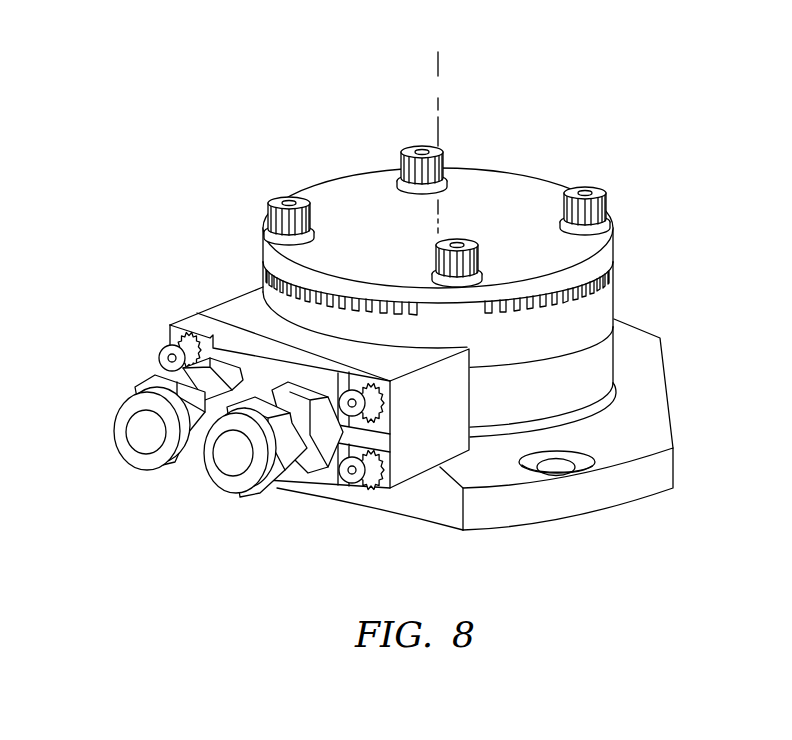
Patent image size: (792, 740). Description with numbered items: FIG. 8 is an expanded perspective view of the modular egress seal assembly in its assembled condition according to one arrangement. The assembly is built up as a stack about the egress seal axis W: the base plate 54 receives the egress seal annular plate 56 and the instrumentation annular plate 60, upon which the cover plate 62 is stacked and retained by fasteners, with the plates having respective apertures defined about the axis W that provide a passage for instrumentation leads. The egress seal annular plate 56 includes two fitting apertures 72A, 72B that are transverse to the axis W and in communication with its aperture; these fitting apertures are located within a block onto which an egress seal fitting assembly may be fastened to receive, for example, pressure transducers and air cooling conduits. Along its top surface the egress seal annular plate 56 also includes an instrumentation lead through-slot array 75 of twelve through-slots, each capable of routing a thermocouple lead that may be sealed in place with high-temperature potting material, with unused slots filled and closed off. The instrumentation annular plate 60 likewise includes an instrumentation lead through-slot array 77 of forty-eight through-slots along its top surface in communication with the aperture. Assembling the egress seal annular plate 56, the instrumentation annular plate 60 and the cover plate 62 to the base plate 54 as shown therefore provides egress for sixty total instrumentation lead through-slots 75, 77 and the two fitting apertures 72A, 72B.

The base plate 54 is at (683, 441).
The egress seal annular plate 56 is at (598, 367).
The instrumentation annular plate 60 is at (602, 300).
The cover plate 62 is at (547, 192).
The fitting aperture 72A is at (143, 462).
The fitting aperture 72B is at (230, 485).
The instrumentation lead through-slot array 75 is at (616, 322).
The instrumentation lead through-slot array 77 is at (615, 251).
The egress seal axis W is at (438, 75).